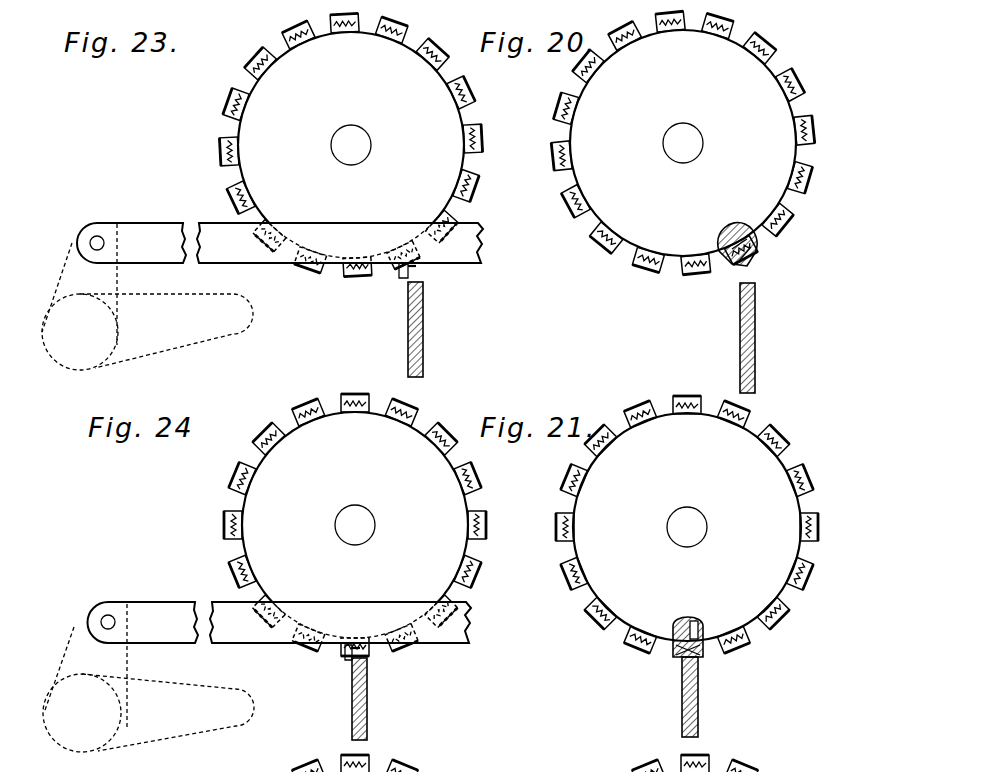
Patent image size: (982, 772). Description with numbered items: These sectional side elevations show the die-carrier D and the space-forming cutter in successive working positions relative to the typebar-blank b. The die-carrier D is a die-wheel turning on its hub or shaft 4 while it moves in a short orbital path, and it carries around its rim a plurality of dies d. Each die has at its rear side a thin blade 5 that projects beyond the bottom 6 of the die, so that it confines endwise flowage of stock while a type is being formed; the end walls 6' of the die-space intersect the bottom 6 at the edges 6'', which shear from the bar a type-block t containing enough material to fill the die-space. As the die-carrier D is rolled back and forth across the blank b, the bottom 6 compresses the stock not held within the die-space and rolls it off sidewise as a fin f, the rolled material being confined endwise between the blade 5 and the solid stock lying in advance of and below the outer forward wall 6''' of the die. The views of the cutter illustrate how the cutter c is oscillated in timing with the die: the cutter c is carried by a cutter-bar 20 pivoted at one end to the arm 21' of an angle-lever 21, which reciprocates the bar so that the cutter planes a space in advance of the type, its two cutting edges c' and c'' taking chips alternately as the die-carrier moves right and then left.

In FIG. 23, the die-carrier D is at (351, 145).
In FIG. 20, the die-carrier D is at (683, 143).
In FIG. 24, the die-carrier D is at (355, 525).
In FIG. 21, the die-carrier D is at (687, 527).
In FIG. 23, the hub or shaft of the die-wheel 4 is at (351, 145).
In FIG. 20, the hub or shaft of the die-wheel 4 is at (683, 143).
In FIG. 24, the hub or shaft of the die-wheel 4 is at (355, 525).
In FIG. 21, the hub or shaft of the die-wheel 4 is at (687, 527).
In FIG. 23, the dies d is at (233, 180).
In FIG. 20, the dies d is at (645, 267).
In FIG. 24, the dies d is at (237, 570).
In FIG. 21, the dies d is at (570, 559).
In FIG. 23, the blade 5 is at (477, 191).
In FIG. 20, the blade 5 is at (738, 270).
In FIG. 24, the blade 5 is at (482, 572).
In FIG. 21, the blade 5 is at (780, 626).
In FIG. 20, the bottom of the die 6 is at (748, 266).
In FIG. 21, the bottom of the die 6 is at (712, 654).
In FIG. 20, the end walls of the die-space 6' is at (751, 267).
In FIG. 21, the end walls of the die-space 6' is at (686, 666).
In FIG. 20, the edges 6'' is at (751, 261).
In FIG. 21, the edges 6'' is at (676, 669).
In FIG. 23, the outer forward wall of the die 6''' is at (495, 138).
In FIG. 20, the outer forward wall of the die 6''' is at (642, 281).
In FIG. 24, the outer forward wall of the die 6''' is at (498, 532).
In FIG. 21, the outer forward wall of the die 6''' is at (595, 625).
In FIG. 23, the cutter-bar 20 is at (366, 239).
In FIG. 24, the cutter-bar 20 is at (369, 620).
In FIG. 23, the angle-lever 21 is at (147, 297).
In FIG. 24, the angle-lever 21 is at (148, 678).
In FIG. 23, the arm of the angle-lever 21' is at (70, 251).
In FIG. 24, the arm of the angle-lever 21' is at (79, 634).
In FIG. 23, the cutter c is at (380, 286).
In FIG. 24, the cutter c is at (331, 669).
In FIG. 23, the cutting edge c' is at (430, 281).
In FIG. 24, the cutting edge c' is at (385, 672).
In FIG. 23, the cutting edge c'' is at (396, 294).
In FIG. 24, the cutting edge c'' is at (345, 676).
In FIG. 23, the type-block t is at (424, 291).
In FIG. 20, the type-block t is at (742, 284).
In FIG. 24, the type-block t is at (372, 669).
In FIG. 21, the type-block t is at (703, 672).
In FIG. 23, the typebar-blank b is at (424, 321).
In FIG. 20, the typebar-blank b is at (757, 329).
In FIG. 24, the typebar-blank b is at (368, 719).
In FIG. 21, the typebar-blank b is at (699, 695).
In FIG. 21, the fin f is at (704, 700).